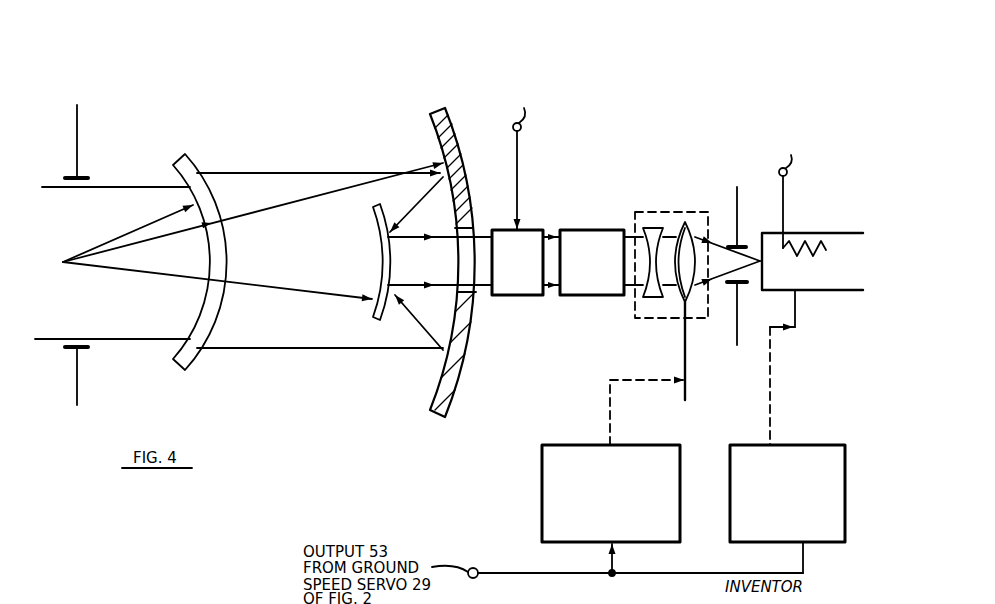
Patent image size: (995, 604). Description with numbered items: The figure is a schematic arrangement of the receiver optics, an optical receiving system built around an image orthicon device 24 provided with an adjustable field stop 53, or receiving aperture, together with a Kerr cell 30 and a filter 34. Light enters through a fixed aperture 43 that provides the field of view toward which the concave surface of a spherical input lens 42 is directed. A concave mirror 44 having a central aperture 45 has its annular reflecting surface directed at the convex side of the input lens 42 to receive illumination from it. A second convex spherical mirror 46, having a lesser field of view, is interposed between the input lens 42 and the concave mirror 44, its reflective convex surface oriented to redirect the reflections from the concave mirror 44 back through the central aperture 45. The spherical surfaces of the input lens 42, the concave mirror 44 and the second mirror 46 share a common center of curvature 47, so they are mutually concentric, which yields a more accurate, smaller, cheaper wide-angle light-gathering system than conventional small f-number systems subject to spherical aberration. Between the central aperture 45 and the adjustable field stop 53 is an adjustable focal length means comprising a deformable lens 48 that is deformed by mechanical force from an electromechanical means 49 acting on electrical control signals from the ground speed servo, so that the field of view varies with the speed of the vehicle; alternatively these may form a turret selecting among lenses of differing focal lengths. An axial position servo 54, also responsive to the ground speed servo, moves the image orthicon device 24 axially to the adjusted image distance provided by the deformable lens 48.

The image orthicon device 24 is at (808, 232).
The Kerr cell 30 is at (526, 233).
The filter 34 is at (583, 278).
The spherical input lens 42 is at (187, 161).
The fixed aperture 43 is at (78, 152).
The concave mirror 44 is at (468, 360).
The central aperture 45 is at (474, 291).
The second convex spherical mirror 46 is at (383, 242).
The common center of curvature 47 is at (67, 265).
The deformable lens 48 is at (682, 232).
The electromechanical means 49 is at (558, 460).
The adjustable field stop 53 is at (736, 206).
The axial position servo 54 is at (803, 515).